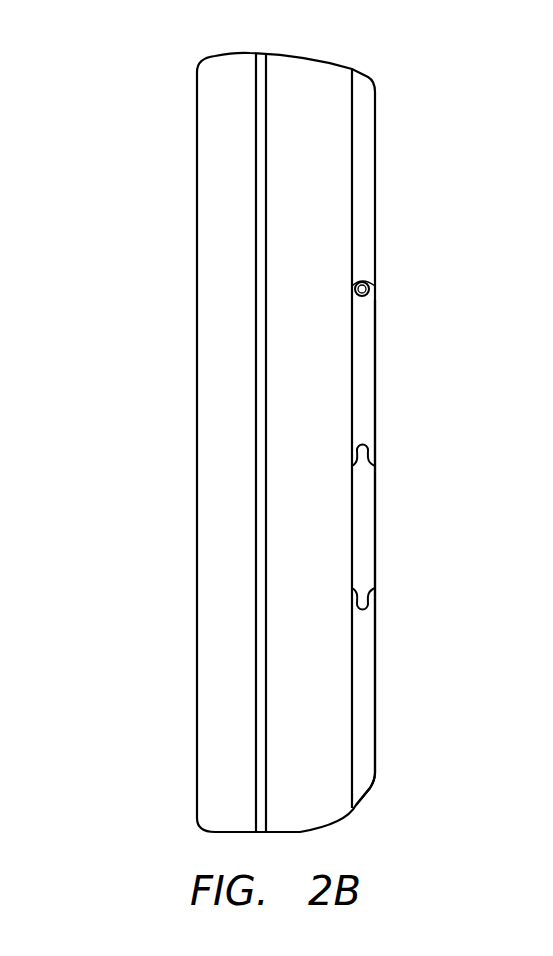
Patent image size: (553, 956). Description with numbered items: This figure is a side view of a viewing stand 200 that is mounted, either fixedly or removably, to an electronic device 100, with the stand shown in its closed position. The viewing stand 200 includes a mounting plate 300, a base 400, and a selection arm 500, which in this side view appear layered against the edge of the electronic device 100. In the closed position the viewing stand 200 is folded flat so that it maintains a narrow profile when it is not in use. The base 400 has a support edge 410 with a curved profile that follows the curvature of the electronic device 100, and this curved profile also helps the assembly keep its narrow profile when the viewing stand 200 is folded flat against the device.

The electronic device 100 is at (155, 428).
The viewing stand 200 is at (420, 140).
The mounting plate 300 is at (375, 240).
The base 400 is at (376, 680).
The support edge 410 is at (364, 794).
The selection arm 500 is at (375, 532).